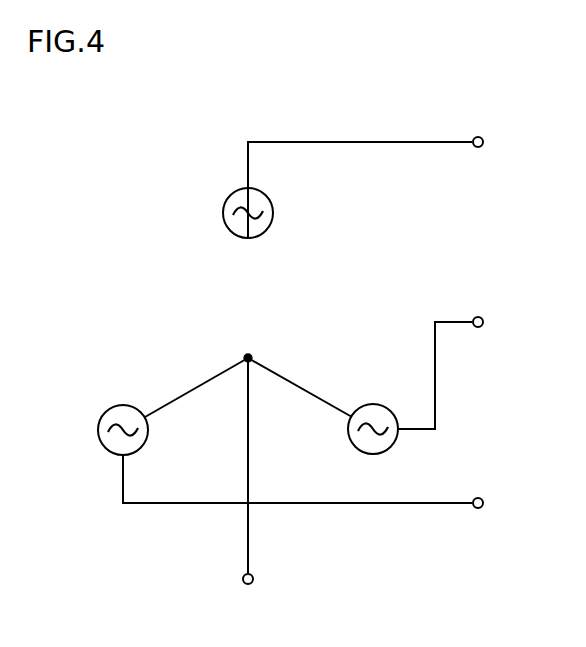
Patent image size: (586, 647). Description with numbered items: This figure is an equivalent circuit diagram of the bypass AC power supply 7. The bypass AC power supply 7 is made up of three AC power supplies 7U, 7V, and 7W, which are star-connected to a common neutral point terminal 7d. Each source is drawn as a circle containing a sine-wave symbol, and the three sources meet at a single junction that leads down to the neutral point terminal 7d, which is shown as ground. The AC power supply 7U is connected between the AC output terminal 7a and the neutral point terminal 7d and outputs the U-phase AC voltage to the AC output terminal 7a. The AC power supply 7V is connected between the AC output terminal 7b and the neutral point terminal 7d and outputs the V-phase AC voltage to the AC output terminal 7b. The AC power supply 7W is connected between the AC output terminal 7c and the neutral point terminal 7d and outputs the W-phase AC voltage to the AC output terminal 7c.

The bypass AC power supply 7 is at (136, 129).
The AC power supply 7U is at (274, 213).
The AC power supply 7V is at (373, 404).
The AC power supply 7W is at (123, 405).
The AC output terminal 7a is at (478, 136).
The AC output terminal 7b is at (478, 316).
The AC output terminal 7c is at (478, 497).
The neutral point terminal 7d is at (254, 579).